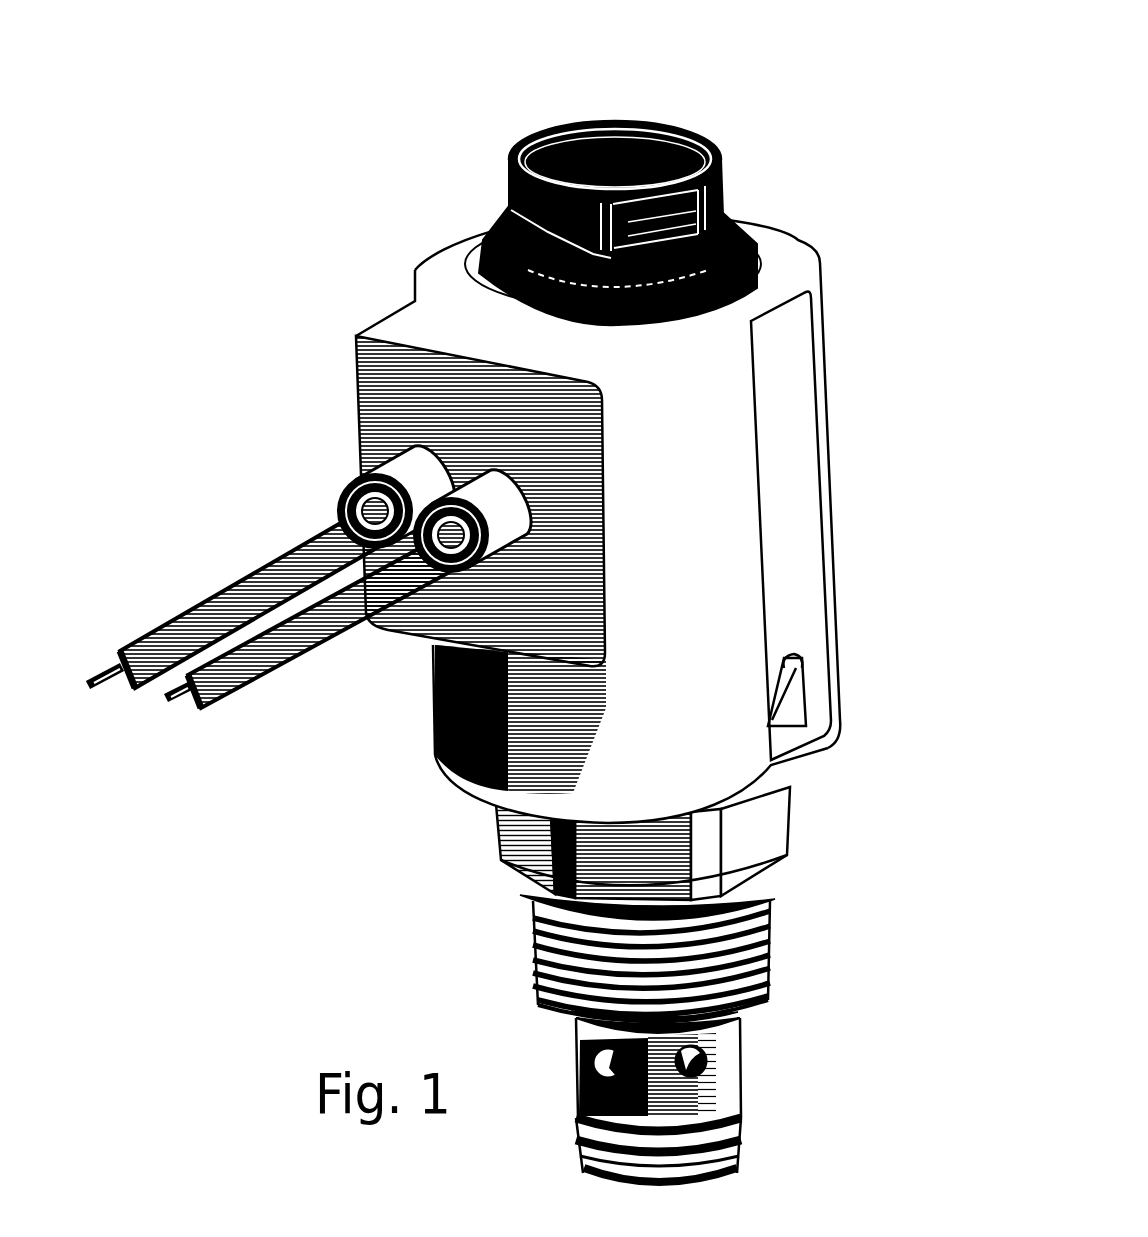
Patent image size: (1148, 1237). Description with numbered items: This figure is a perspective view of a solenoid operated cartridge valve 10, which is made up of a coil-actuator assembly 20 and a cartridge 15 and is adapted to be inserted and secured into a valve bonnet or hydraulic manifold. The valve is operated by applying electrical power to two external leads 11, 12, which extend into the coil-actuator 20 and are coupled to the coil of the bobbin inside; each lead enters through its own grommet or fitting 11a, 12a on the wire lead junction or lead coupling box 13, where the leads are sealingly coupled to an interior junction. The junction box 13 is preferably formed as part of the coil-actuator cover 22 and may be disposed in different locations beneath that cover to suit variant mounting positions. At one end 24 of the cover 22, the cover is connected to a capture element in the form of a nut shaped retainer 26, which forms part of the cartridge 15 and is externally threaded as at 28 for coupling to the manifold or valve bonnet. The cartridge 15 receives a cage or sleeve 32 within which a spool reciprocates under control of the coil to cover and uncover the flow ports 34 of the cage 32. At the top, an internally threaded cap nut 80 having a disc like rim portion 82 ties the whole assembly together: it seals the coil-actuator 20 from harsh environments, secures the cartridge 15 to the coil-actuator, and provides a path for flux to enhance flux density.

The solenoid operated cartridge valve 10 is at (713, 127).
The external lead 11 is at (267, 633).
The second wire grommet 11a is at (455, 525).
The external lead 12 is at (205, 583).
The first wire grommet 12a is at (347, 467).
The wire lead junction box 13 is at (618, 466).
The cartridge 15 is at (540, 1000).
The coil-actuator assembly 20 is at (830, 450).
The coil-actuator cover 22 is at (825, 542).
The end of cover 24 is at (832, 715).
The nut shaped retainer 26 is at (750, 830).
The external threads 28 is at (757, 940).
The cage 32 is at (705, 1030).
The flow ports 34 is at (732, 1040).
The cap nut 80 is at (700, 197).
The disc like rim portion 82 is at (467, 240).